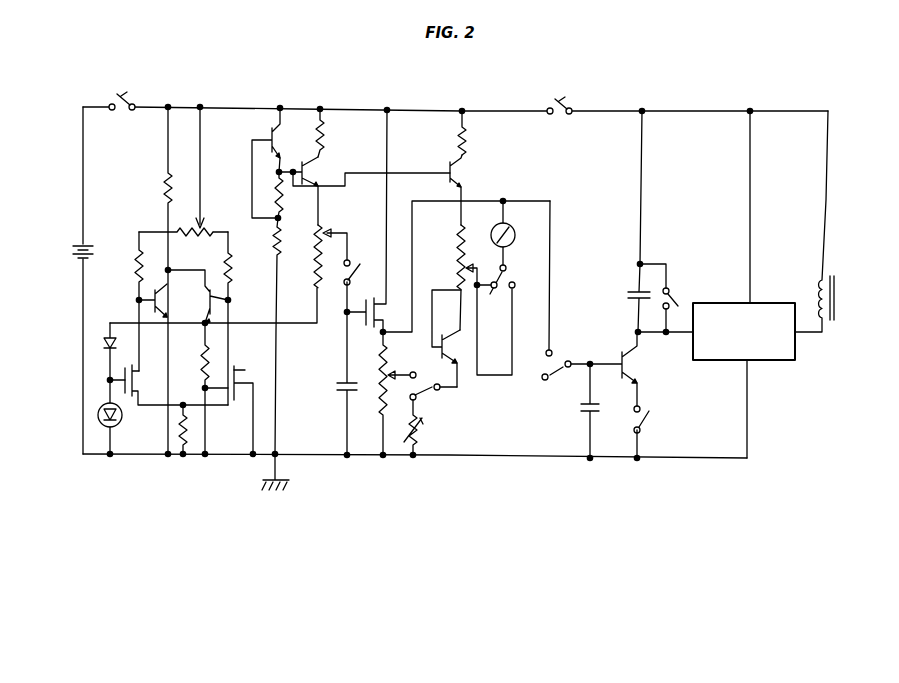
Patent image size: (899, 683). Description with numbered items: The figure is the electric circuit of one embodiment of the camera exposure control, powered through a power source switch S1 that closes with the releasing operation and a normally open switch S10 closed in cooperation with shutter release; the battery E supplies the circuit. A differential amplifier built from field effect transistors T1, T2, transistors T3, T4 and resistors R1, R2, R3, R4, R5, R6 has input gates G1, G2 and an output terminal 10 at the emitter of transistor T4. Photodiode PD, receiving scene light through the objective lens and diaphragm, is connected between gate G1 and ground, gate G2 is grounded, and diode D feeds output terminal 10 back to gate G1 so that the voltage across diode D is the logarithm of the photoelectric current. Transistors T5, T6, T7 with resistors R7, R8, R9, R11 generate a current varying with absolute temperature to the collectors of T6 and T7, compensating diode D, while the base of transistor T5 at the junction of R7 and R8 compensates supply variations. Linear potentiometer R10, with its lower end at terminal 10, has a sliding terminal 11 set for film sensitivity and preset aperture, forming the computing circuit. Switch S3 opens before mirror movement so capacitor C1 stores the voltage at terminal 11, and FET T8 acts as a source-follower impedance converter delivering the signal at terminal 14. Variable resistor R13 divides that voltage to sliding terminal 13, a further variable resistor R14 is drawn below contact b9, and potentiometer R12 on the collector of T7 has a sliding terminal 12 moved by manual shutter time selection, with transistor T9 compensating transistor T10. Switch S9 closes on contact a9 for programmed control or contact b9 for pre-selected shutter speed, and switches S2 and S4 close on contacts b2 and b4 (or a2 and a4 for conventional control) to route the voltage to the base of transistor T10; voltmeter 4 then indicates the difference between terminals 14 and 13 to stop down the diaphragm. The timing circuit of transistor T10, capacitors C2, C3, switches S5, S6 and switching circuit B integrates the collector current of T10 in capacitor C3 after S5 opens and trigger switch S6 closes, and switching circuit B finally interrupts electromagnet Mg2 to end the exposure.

The power source switch S1 is at (125, 98).
The switch S10 is at (563, 104).
The battery E is at (72, 256).
The resistor R5 is at (162, 190).
The resistor R6 is at (206, 222).
The resistor R3 is at (137, 262).
The resistor R4 is at (224, 262).
The transistor T3 is at (172, 297).
The transistor T4 is at (208, 292).
The output terminal 10 is at (210, 322).
The diode D is at (108, 344).
The gate G1 is at (106, 380).
The photodiode PD is at (98, 418).
The field effect transistor T1 is at (136, 378).
The resistor R1 is at (188, 432).
The resistor R2 is at (201, 360).
The field effect transistor T2 is at (226, 396).
The gate G2 is at (246, 368).
The transistor T5 is at (269, 136).
The resistor R7 is at (292, 190).
The resistor R8 is at (282, 232).
The transistor T6 is at (306, 168).
The resistor R9 is at (325, 135).
The potentiometer R10 is at (314, 254).
The sliding terminal 11 is at (331, 233).
The switch S3 is at (358, 266).
The capacitor C1 is at (335, 386).
The field effect transistor T8 is at (362, 324).
The terminal 14 is at (386, 330).
The variable resistor R13 is at (378, 408).
The sliding terminal 13 is at (393, 372).
The contact a9 is at (416, 375).
The contact b9 is at (411, 400).
The switch S9 is at (440, 392).
The variable resistor R14 is at (419, 432).
The transistor T7 is at (448, 168).
The resistor R11 is at (467, 140).
The potentiometer R12 is at (456, 242).
The sliding terminal 12 is at (470, 265).
The transistor T9 is at (462, 344).
The voltmeter 4 is at (513, 226).
The switch S2 is at (510, 278).
The contact b2 is at (494, 289).
The contact a2 is at (515, 286).
The contact a4 is at (545, 351).
The switch S4 is at (565, 360).
The contact b4 is at (544, 380).
The capacitor C2 is at (580, 410).
The transistor T10 is at (641, 372).
The trigger switch S6 is at (648, 418).
The capacitor C3 is at (628, 294).
The switch S5 is at (678, 298).
The switching circuit B is at (744, 284).
The electromagnet Mg2 is at (838, 296).